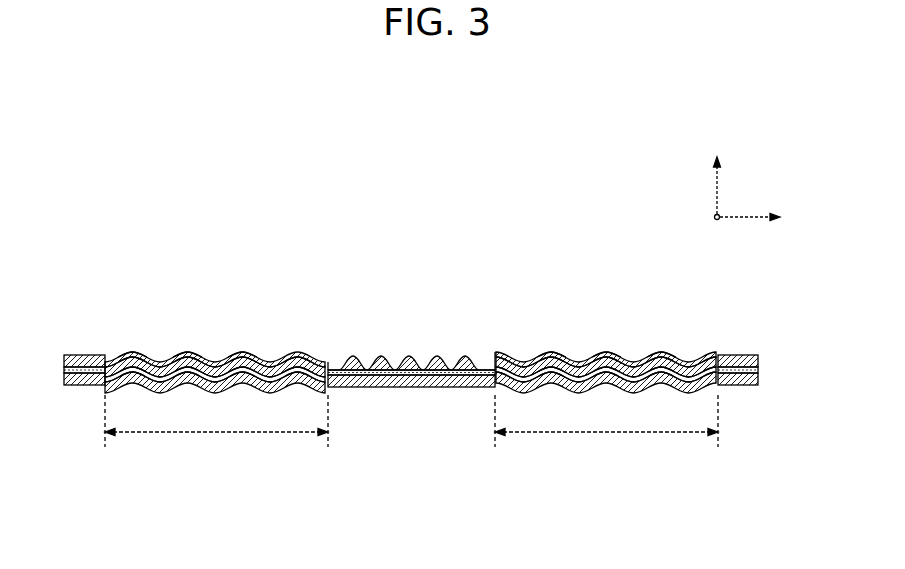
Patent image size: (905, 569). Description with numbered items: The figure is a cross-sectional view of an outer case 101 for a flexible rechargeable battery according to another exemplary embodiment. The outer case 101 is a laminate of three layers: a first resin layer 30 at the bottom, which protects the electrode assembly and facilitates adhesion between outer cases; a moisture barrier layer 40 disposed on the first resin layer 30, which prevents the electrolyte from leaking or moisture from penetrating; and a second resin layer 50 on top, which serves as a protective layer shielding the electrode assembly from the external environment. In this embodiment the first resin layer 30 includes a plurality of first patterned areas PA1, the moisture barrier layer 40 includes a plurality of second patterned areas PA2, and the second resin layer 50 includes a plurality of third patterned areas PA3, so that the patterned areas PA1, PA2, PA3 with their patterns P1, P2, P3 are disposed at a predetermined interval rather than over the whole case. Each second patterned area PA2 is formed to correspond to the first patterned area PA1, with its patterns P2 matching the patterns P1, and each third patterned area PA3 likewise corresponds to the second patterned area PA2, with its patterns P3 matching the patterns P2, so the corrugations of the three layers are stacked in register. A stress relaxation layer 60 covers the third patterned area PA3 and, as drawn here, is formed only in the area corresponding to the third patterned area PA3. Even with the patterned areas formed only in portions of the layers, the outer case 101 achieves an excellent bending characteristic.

The outer case 101 is at (458, 143).
The first resin layer 30 is at (760, 384).
The moisture barrier layer 40 is at (758, 370).
The second resin layer 50 is at (745, 356).
The stress relaxation layer 60 is at (297, 352).
The patterns P1 is at (133, 351).
The patterns P2 is at (188, 351).
The patterns P3 is at (243, 351).
The first patterned area PA1 is at (216, 429).
The second patterned area PA2 is at (606, 429).
The third patterned area PA3 is at (411, 429).